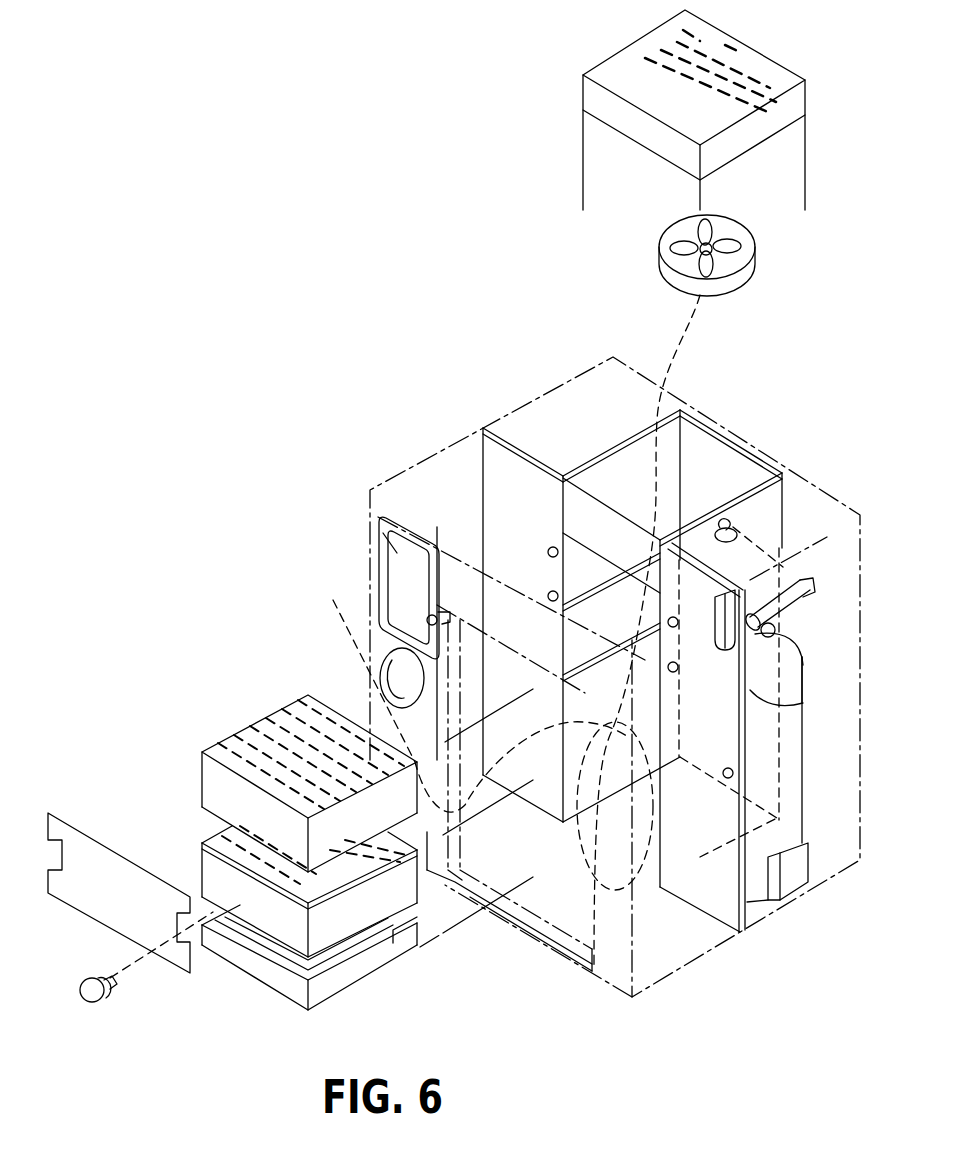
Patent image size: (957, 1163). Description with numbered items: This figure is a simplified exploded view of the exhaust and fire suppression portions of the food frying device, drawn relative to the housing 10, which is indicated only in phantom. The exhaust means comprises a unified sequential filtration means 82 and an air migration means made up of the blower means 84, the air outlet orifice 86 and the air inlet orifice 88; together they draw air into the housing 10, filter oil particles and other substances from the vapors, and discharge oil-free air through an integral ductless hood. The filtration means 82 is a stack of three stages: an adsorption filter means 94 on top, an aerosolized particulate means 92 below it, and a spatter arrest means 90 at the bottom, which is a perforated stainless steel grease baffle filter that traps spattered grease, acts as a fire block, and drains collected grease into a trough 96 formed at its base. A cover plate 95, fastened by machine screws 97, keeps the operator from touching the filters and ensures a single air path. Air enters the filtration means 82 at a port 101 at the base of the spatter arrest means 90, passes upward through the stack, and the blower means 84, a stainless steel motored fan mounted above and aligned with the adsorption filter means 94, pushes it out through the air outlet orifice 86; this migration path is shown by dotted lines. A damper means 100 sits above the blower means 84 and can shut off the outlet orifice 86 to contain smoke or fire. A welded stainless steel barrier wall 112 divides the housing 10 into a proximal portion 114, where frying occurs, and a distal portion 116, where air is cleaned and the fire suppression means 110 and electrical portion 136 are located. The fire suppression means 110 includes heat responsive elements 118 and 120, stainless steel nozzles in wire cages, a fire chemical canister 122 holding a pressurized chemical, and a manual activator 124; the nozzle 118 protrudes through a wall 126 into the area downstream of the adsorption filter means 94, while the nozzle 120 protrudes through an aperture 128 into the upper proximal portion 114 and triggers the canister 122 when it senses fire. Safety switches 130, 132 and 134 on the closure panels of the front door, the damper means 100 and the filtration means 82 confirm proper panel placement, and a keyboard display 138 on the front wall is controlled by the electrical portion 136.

The housing 10 is at (400, 415).
The unified sequential filtration means 82 is at (172, 790).
The blower means 84 is at (718, 277).
The air outlet orifice 86 is at (758, 62).
The air inlet orifice 88 is at (347, 695).
The spatter arrest means 90 is at (246, 948).
The aerosolized particulate means 92 is at (323, 928).
The adsorption filter means 94 is at (337, 835).
The cover plate 95 is at (113, 875).
The trough 96 is at (214, 970).
The machine screws 97 is at (93, 1000).
The damper means 100 is at (788, 112).
The port 101 is at (548, 890).
The fire suppression means 110 is at (871, 612).
The barrier wall 112 is at (743, 930).
The proximal portion 114 is at (667, 1005).
The distal portion 116 is at (814, 915).
The heat responsive element 118 is at (747, 515).
The heat responsive element 120 is at (748, 630).
The fire chemical canister 122 is at (806, 737).
The manual activator 124 is at (392, 680).
The wall 126 is at (765, 503).
The aperture 128 is at (804, 700).
The safety switch 130 is at (427, 617).
The safety switch 132 is at (551, 547).
The safety switch 134 is at (549, 593).
The electrical portion 136 is at (592, 362).
The keyboard display 138 is at (377, 525).